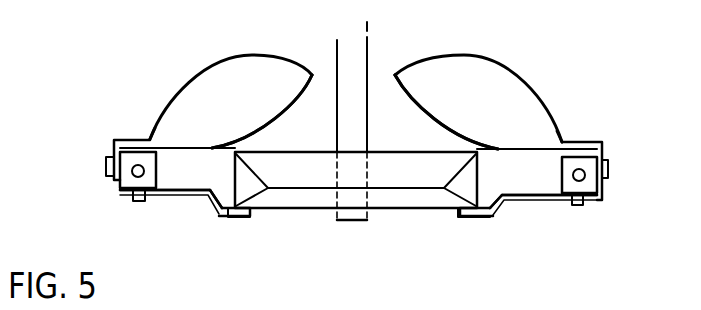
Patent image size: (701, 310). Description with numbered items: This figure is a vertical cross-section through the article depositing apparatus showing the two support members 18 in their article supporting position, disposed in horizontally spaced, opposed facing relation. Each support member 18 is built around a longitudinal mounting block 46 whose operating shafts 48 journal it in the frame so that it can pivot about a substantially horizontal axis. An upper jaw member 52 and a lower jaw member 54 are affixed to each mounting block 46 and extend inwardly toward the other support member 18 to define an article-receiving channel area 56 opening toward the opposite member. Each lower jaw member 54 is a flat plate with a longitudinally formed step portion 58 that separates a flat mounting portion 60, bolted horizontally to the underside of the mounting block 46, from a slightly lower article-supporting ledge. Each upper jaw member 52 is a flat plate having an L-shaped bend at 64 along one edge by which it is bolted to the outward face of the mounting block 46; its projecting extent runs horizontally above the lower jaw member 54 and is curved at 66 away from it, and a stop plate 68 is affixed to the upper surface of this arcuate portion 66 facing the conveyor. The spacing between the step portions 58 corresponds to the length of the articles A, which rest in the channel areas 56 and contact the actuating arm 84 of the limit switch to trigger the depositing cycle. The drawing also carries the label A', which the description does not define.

The support member 18 is at (120, 187).
The mounting block 46 is at (122, 186).
The operating shaft 48 is at (128, 138).
The upper jaw member 52 is at (148, 127).
The lower jaw member 54 is at (200, 212).
The article-receiving channel area 56 is at (212, 147).
The step portion 58 is at (236, 217).
The mounting portion 60 is at (138, 201).
The L-shaped bend 64 is at (113, 142).
The arcuate portion 66 is at (279, 129).
The stop plate 68 is at (262, 90).
The actuating arm 84 is at (362, 62).
The article A is at (356, 207).
The step section A' is at (353, 221).